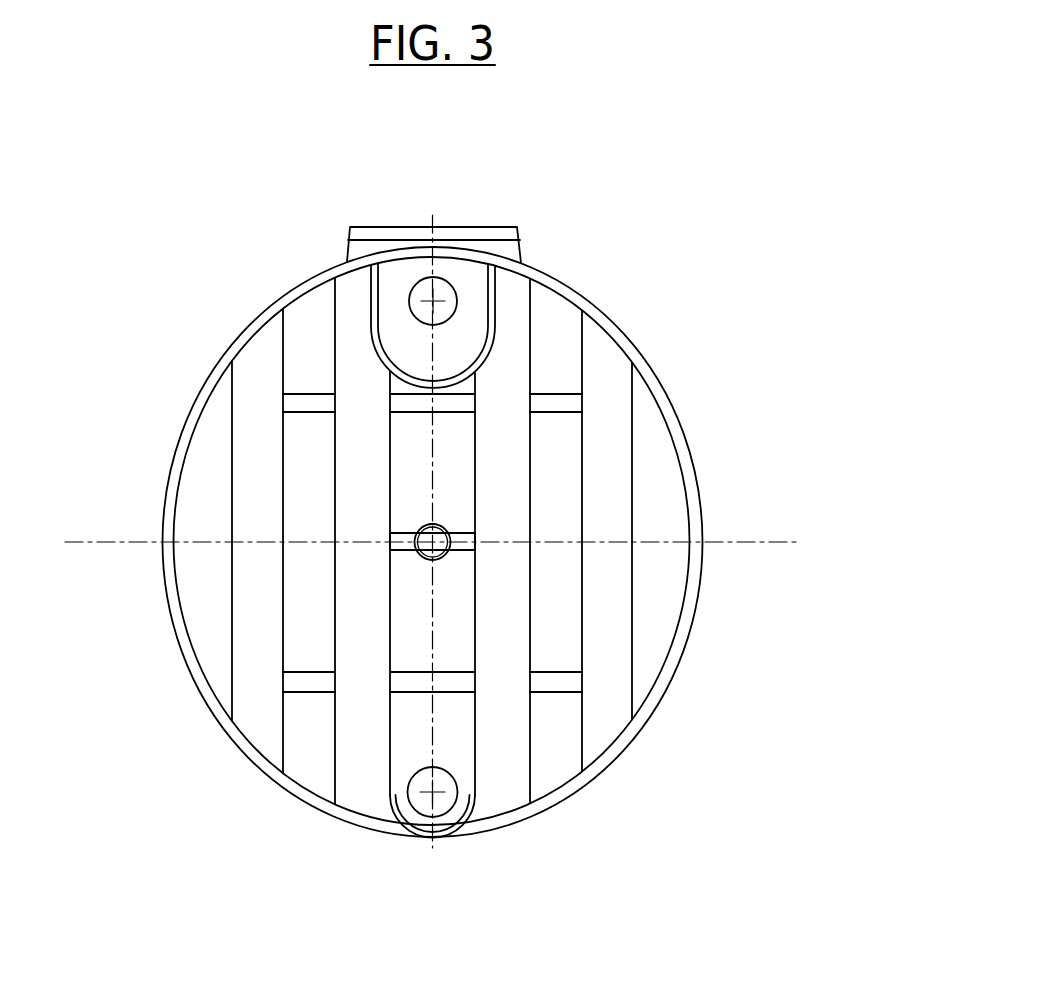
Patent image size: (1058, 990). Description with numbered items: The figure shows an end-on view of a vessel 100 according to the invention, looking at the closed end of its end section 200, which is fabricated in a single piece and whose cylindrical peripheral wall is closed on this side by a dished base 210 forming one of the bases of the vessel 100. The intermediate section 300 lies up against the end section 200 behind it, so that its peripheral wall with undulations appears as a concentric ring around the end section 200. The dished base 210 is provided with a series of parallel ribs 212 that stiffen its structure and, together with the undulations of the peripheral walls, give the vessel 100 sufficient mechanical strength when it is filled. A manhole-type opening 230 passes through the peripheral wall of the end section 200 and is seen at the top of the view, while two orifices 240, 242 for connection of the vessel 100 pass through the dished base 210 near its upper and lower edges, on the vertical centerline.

The vessel 100 is at (680, 241).
The end section 200 is at (690, 457).
The intermediate section 300 is at (509, 541).
The dished base 210 is at (663, 625).
The ribs 212 is at (605, 710).
The opening 230 is at (350, 227).
The orifice 240 is at (440, 277).
The orifice 242 is at (418, 820).